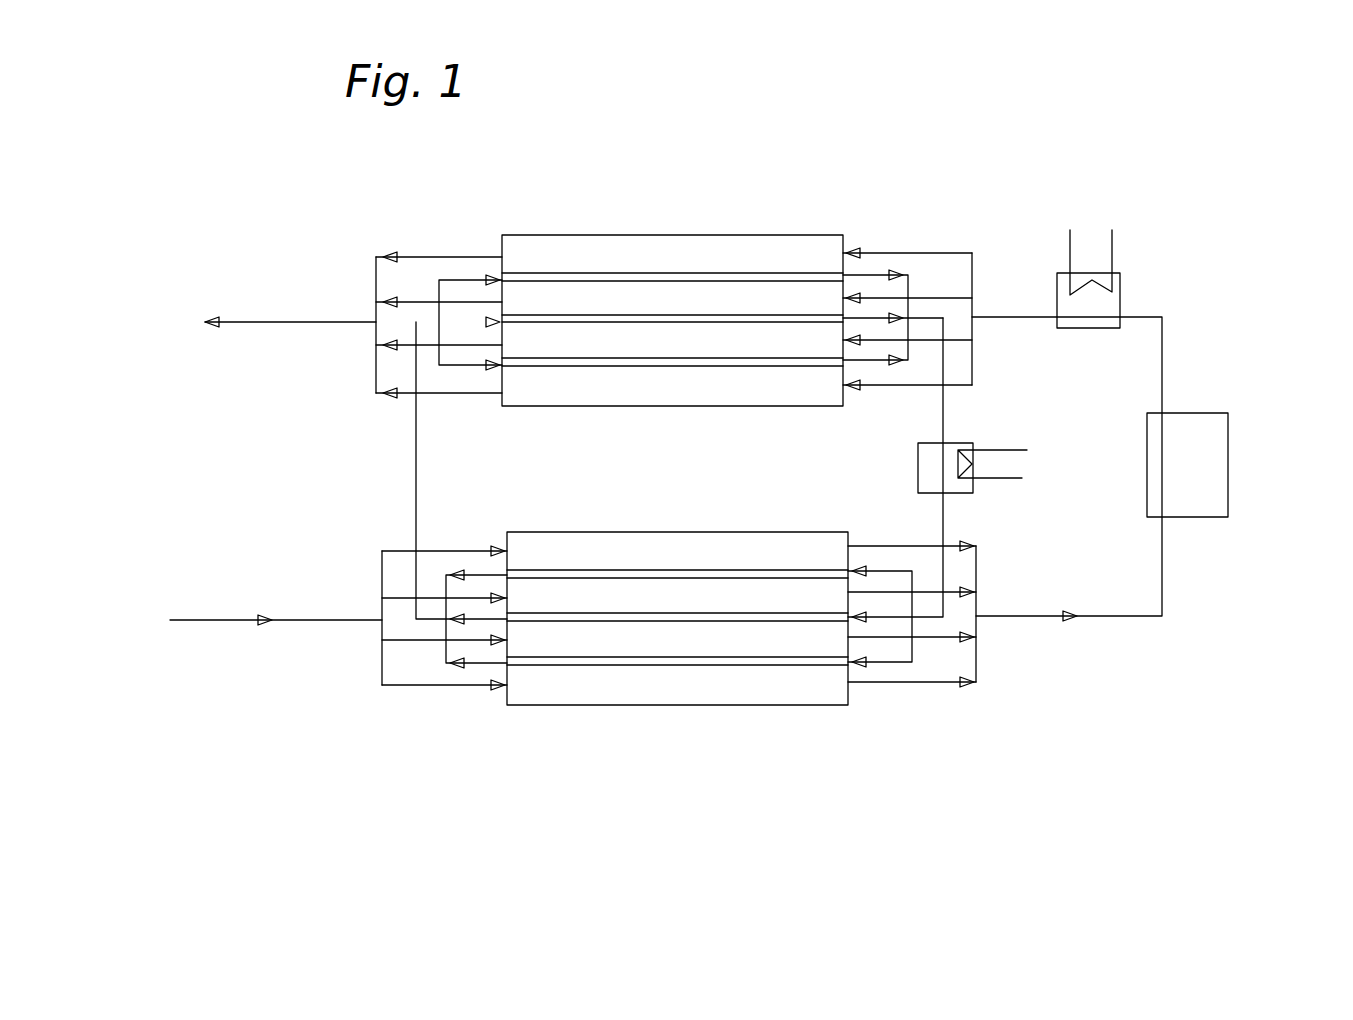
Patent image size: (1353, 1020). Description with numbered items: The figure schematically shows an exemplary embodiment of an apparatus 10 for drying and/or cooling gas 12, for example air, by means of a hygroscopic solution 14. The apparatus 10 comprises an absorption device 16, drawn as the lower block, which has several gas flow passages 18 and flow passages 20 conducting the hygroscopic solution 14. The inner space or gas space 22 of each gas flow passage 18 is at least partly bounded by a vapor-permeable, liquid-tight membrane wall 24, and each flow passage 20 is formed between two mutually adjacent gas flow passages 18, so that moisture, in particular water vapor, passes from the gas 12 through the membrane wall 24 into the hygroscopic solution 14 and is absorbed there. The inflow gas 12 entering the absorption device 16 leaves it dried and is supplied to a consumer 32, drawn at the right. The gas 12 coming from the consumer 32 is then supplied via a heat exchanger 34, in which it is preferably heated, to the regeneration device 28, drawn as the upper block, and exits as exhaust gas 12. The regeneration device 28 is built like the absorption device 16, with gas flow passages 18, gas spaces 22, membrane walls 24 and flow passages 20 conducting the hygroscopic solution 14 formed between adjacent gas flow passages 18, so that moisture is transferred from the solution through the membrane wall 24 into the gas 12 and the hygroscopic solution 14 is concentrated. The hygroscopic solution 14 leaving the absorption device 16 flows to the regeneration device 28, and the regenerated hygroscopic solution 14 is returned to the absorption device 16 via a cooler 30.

The apparatus 10 is at (873, 138).
The gas 12 is at (278, 323).
The hygroscopic solution 14 is at (420, 462).
The absorption device 16 is at (808, 707).
The gas flow passage 18 is at (532, 303).
The flow passage 20 is at (583, 276).
The gas space 22 is at (647, 307).
The membrane wall 24 is at (702, 316).
The regeneration device 28 is at (740, 220).
The cooler 30 is at (928, 460).
The consumer 32 is at (1218, 493).
The heat exchanger 34 is at (1115, 293).